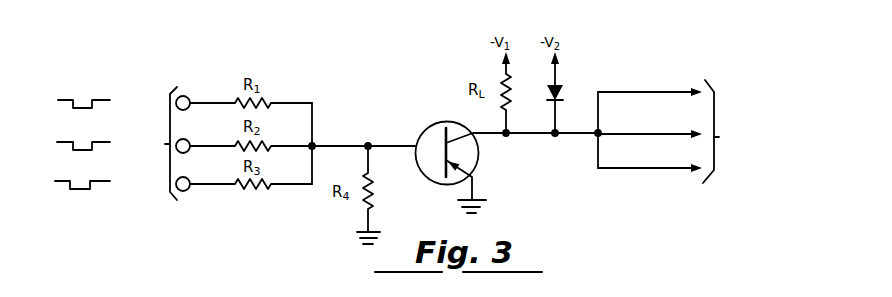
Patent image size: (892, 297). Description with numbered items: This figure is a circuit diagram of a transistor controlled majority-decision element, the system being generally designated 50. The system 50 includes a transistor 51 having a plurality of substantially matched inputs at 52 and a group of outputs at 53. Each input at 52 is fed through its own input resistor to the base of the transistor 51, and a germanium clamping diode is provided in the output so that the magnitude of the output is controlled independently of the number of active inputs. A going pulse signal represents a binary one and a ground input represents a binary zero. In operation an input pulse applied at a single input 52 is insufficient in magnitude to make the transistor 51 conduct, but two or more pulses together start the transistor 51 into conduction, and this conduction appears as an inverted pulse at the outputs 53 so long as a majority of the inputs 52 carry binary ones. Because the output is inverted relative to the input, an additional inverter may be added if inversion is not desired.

The majority-decision system 50 is at (471, 136).
The transistor 51 is at (478, 166).
The inputs 52 is at (176, 89).
The outputs 53 is at (718, 170).